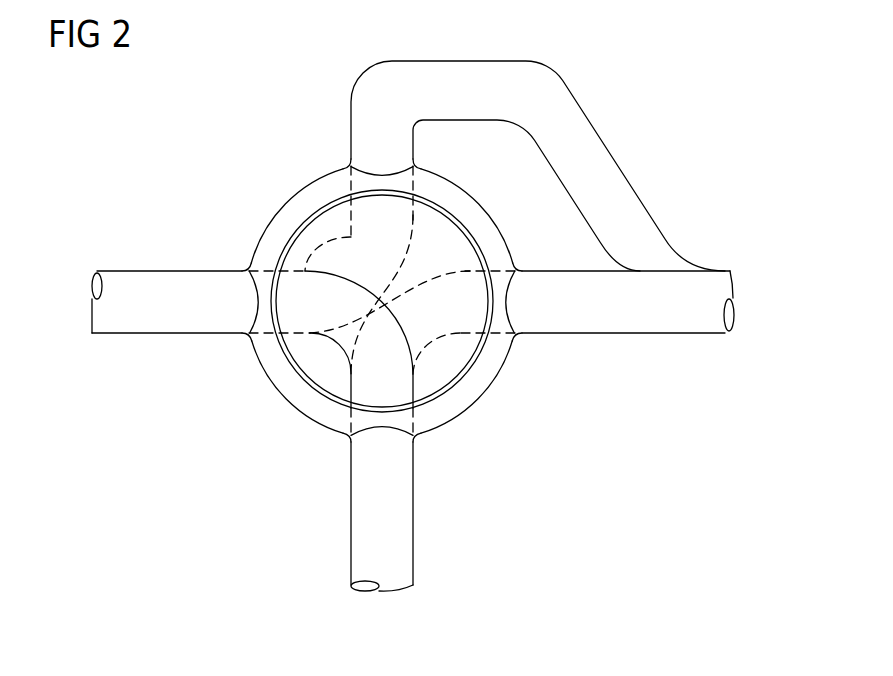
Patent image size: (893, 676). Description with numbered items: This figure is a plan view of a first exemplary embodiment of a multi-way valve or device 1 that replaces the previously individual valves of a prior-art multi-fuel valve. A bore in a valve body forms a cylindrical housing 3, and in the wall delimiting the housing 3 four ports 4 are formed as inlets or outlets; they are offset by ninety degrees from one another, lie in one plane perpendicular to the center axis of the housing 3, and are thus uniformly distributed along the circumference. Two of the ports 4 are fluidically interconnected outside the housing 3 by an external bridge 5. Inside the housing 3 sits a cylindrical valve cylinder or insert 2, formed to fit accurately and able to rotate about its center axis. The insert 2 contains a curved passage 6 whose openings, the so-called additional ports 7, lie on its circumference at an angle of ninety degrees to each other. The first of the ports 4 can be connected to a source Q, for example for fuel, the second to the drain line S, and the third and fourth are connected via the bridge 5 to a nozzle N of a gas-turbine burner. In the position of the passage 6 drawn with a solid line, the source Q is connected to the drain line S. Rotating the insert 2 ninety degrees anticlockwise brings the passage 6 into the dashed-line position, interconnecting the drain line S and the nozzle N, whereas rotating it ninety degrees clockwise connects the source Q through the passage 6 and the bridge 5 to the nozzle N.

The multi-way valve 1 is at (708, 88).
The insert 2 is at (282, 363).
The housing 3 is at (310, 391).
The ports 4 is at (379, 172).
The external bridge 5 is at (461, 68).
The curved passage 6 is at (305, 273).
The additional ports 7 is at (280, 302).
The source Q is at (93, 300).
The nozzle N is at (736, 298).
The drain line S is at (379, 591).